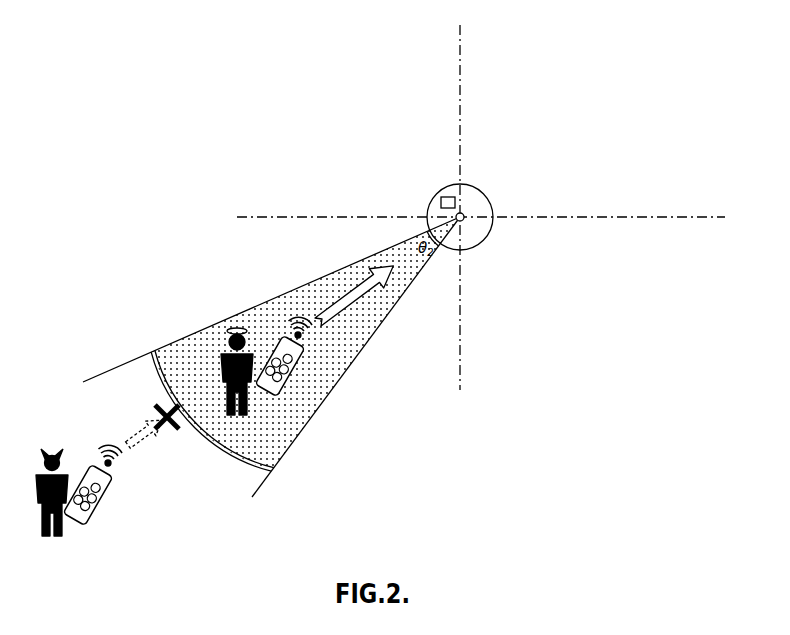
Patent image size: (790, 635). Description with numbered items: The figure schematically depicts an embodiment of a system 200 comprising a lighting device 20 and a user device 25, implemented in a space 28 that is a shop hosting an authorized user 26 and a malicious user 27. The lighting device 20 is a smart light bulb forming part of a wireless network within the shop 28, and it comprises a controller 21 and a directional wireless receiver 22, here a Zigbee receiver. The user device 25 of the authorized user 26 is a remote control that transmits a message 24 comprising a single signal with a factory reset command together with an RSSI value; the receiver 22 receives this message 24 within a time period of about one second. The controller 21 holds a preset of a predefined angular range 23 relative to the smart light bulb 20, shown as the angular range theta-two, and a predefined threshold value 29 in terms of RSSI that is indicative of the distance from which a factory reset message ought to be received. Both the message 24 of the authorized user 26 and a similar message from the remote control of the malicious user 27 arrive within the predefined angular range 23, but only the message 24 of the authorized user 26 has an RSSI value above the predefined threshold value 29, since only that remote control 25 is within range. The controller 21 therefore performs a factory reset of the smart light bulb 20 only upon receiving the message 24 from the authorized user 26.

The system 200 is at (303, 106).
The lighting device 20 is at (446, 196).
The controller 21 is at (458, 196).
The directional wireless receiver 22 is at (466, 213).
The predefined angular range 23 is at (400, 251).
The message 24 is at (376, 291).
The user device 25 is at (301, 365).
The authorized user 26 is at (244, 354).
The malicious user 27 is at (63, 467).
The space 28 is at (555, 103).
The predefined threshold value 29 is at (275, 464).